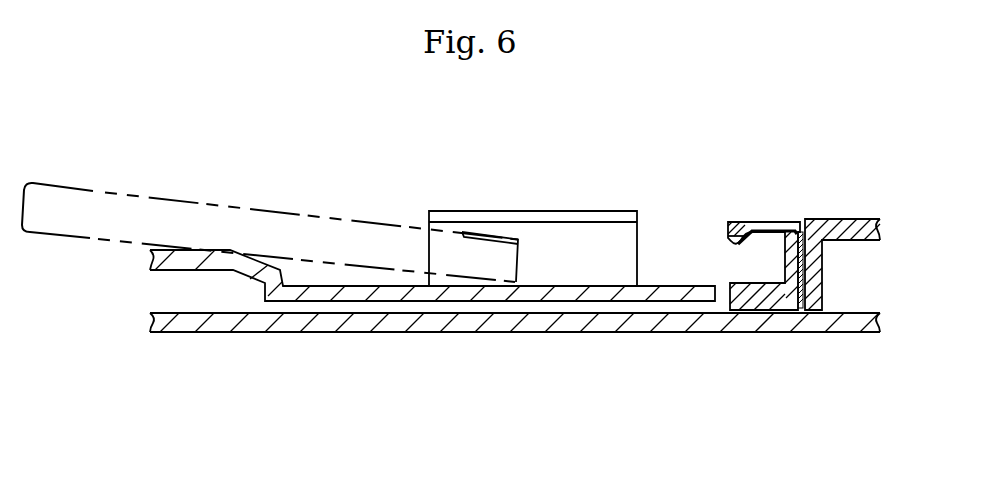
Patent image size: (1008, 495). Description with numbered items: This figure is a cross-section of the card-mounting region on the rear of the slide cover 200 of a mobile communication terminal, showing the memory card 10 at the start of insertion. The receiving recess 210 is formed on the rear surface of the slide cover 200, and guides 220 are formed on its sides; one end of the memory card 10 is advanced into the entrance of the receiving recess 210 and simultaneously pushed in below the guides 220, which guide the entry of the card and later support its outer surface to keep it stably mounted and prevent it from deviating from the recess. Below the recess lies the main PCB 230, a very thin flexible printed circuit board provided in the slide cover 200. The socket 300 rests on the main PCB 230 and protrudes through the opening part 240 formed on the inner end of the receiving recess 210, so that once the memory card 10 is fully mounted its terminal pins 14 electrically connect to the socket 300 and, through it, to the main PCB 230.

The memory card 10 is at (174, 192).
The terminal pins 14 is at (495, 232).
The slide cover 200 is at (840, 219).
The receiving recess 210 is at (373, 280).
The guide 220 is at (560, 211).
The main PCB 230 is at (605, 322).
The opening part 240 is at (725, 286).
The socket 300 is at (740, 222).